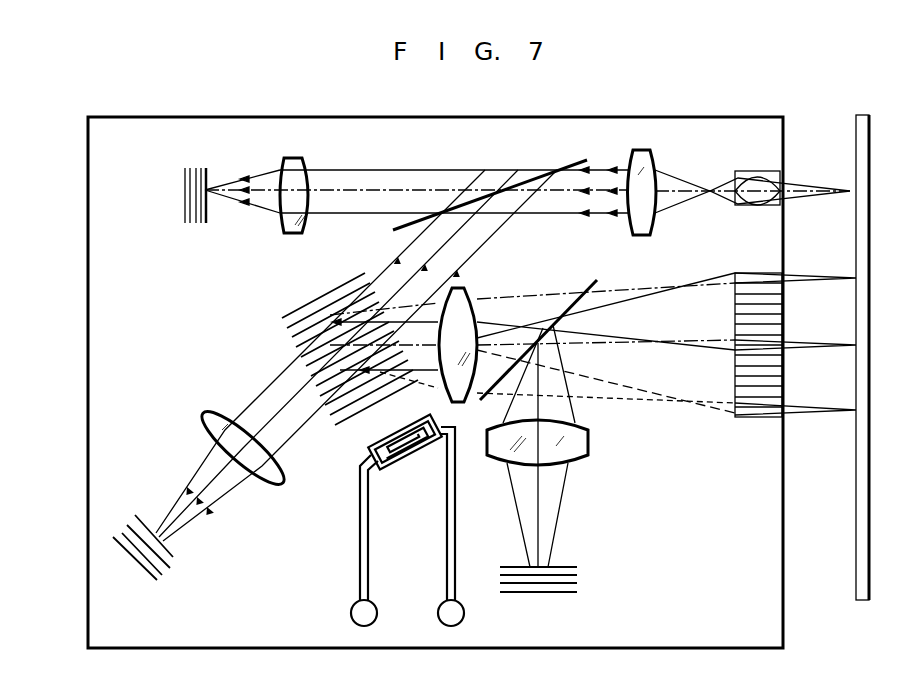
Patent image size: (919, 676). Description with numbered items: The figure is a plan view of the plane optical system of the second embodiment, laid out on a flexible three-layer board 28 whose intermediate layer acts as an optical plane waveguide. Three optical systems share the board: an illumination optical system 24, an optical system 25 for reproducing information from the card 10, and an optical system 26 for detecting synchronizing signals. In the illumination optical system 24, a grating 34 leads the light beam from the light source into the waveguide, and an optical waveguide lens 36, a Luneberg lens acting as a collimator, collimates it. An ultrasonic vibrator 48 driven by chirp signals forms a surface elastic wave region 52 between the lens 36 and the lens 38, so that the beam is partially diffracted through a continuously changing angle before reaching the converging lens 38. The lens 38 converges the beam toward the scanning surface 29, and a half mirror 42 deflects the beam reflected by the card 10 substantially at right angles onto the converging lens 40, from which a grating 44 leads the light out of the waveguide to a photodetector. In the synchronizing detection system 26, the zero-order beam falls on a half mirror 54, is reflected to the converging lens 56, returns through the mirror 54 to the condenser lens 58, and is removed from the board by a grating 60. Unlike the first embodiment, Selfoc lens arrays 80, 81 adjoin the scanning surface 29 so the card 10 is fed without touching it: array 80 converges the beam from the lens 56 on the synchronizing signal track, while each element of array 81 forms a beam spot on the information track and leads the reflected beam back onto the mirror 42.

The card 10 is at (869, 125).
The illumination optical system 24 is at (250, 371).
The optical system for reproducing information 25 is at (634, 490).
The optical system for detecting synchronizing signals 26 is at (258, 231).
The board 28 is at (88, 165).
The scanning surface 29 is at (783, 617).
The grating 34 is at (168, 563).
The optical waveguide lens 36 is at (275, 482).
The lens 38 is at (475, 296).
The lens 40 is at (588, 445).
The half mirror 42 is at (575, 296).
The grating 44 is at (577, 565).
The ultrasonic vibrator 48 is at (400, 468).
The surface elastic wave region 52 is at (278, 307).
The half mirror 54 is at (568, 160).
The converging lens 56 is at (645, 157).
The condenser lens 58 is at (300, 160).
The grating 60 is at (205, 165).
The lens array 80 is at (757, 170).
The lens array 81 is at (758, 418).